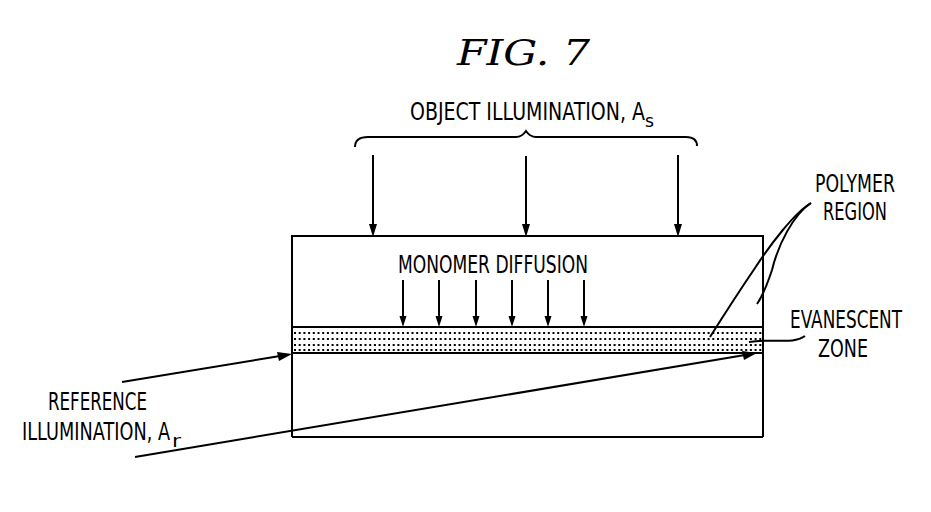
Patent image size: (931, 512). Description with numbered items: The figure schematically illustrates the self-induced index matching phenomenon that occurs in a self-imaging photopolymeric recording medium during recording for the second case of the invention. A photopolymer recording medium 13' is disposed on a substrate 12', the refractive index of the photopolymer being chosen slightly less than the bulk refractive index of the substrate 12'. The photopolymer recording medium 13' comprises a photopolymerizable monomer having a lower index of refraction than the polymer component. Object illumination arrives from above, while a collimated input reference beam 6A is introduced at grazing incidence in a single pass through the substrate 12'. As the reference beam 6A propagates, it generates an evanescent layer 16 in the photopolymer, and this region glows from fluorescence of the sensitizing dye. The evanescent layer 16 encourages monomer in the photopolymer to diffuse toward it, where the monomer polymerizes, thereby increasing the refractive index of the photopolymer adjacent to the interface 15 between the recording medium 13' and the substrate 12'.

The photopolymer recording medium 13' is at (527, 308).
The substrate 12' is at (527, 449).
The evanescent layer 16 is at (355, 336).
The interface 15 is at (320, 355).
The collimated input reference beam 6A is at (222, 445).